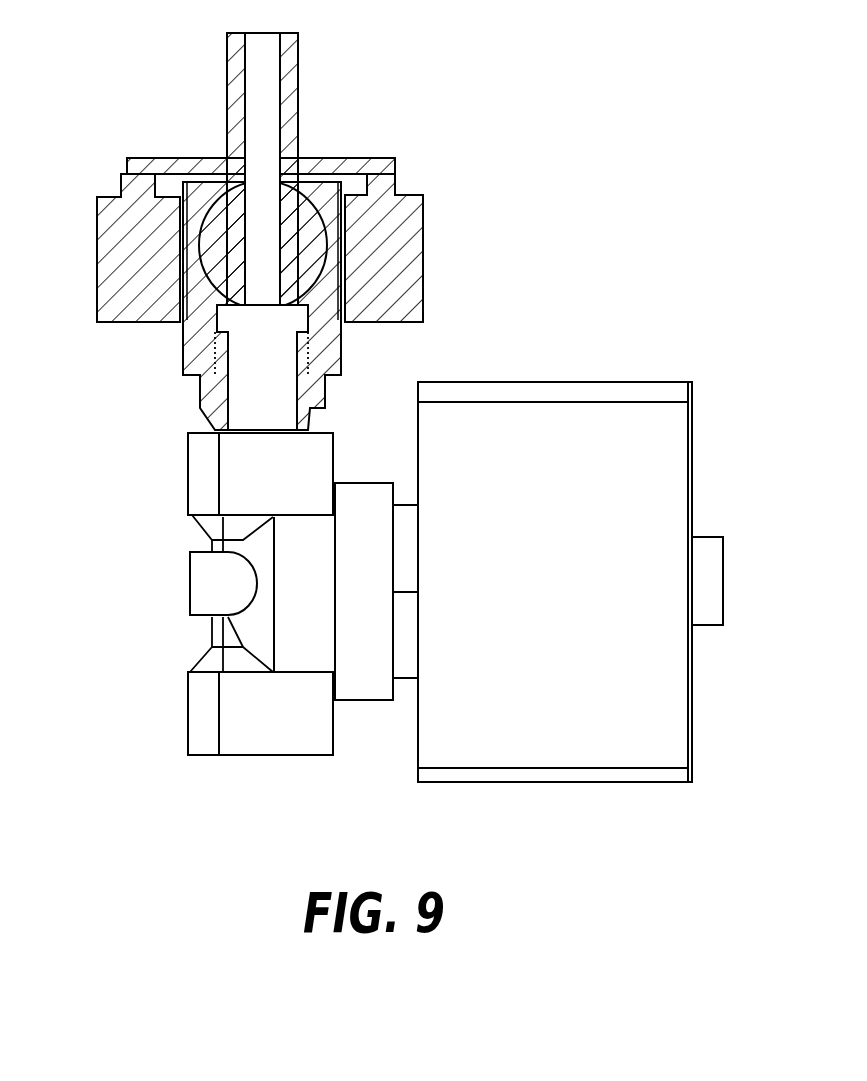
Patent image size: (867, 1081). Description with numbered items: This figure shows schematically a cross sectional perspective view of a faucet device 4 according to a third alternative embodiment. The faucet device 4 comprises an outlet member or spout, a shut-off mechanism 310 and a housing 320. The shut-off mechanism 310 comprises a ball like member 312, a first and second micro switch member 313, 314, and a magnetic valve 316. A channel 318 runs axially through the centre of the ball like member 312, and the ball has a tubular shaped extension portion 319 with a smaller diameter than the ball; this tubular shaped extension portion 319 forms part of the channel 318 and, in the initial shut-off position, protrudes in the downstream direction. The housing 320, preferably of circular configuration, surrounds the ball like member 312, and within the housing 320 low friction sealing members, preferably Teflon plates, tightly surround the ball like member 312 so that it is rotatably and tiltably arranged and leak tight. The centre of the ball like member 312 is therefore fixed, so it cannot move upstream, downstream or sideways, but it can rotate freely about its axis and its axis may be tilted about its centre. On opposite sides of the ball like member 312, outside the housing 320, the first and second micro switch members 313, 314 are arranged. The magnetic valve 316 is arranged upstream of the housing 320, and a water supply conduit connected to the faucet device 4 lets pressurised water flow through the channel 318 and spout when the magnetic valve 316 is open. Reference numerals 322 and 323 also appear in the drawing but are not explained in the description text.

The faucet device 4 is at (152, 748).
The shut-off mechanism 310 is at (168, 475).
The ball like member 312 is at (298, 168).
The first micro switch member 313 is at (97, 243).
The second micro switch member 314 is at (410, 253).
The magnetic valve 316 is at (290, 740).
The channel 318 is at (262, 60).
The tubular shaped extension portion 319 is at (228, 52).
The housing 320 is at (343, 338).
The flange plate 322 is at (220, 158).
The ball socket 323 is at (178, 333).